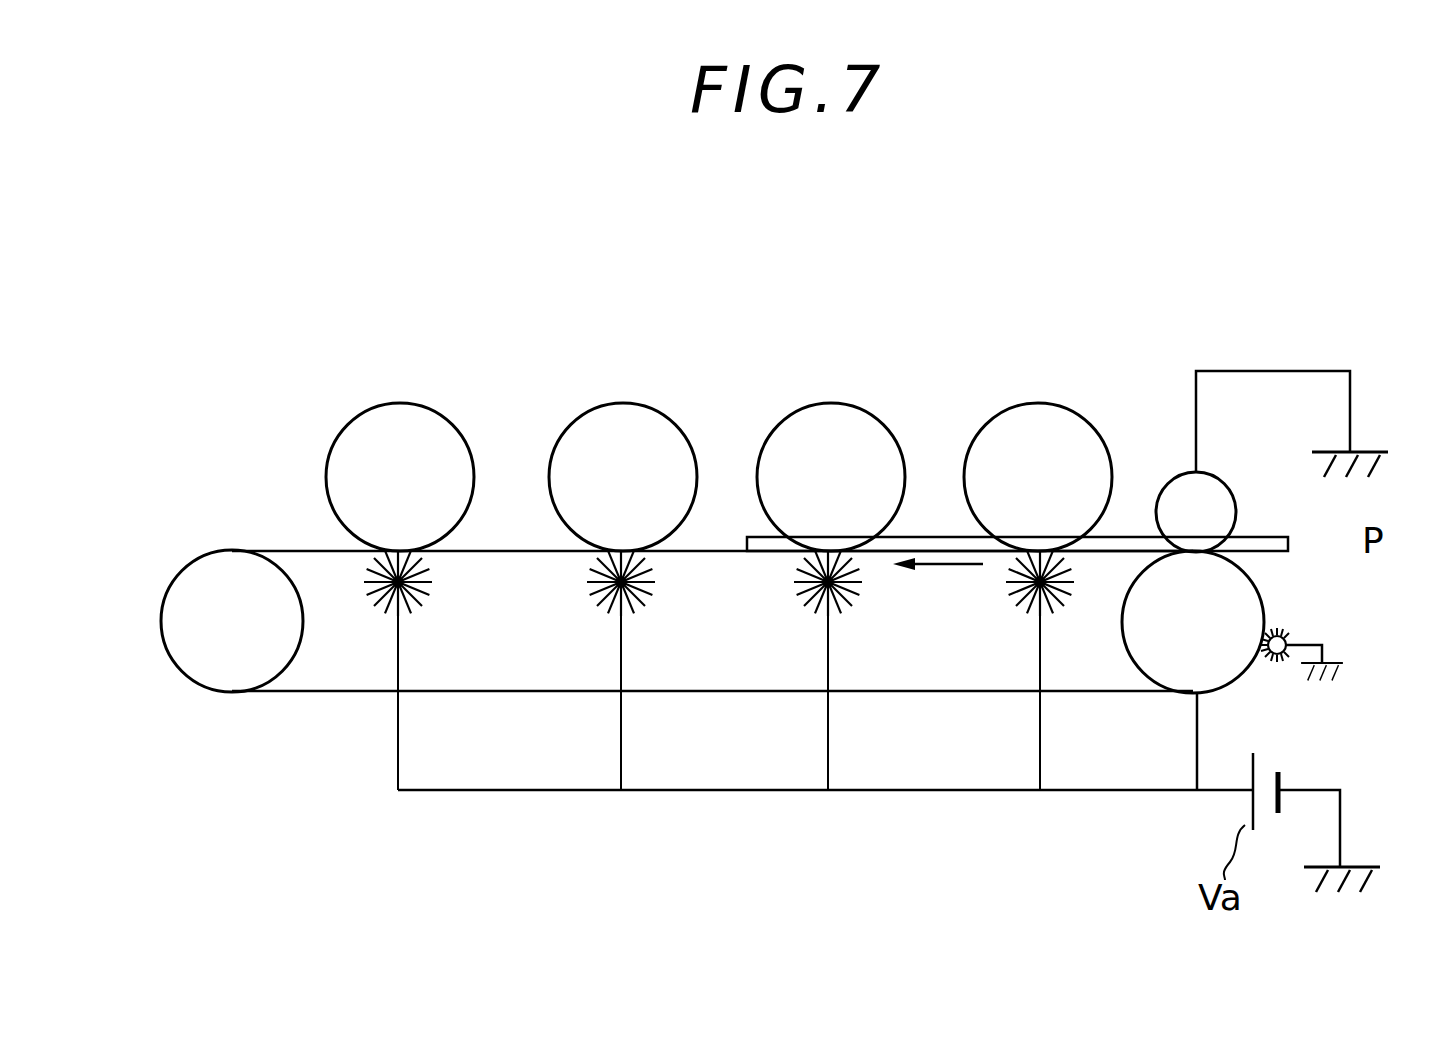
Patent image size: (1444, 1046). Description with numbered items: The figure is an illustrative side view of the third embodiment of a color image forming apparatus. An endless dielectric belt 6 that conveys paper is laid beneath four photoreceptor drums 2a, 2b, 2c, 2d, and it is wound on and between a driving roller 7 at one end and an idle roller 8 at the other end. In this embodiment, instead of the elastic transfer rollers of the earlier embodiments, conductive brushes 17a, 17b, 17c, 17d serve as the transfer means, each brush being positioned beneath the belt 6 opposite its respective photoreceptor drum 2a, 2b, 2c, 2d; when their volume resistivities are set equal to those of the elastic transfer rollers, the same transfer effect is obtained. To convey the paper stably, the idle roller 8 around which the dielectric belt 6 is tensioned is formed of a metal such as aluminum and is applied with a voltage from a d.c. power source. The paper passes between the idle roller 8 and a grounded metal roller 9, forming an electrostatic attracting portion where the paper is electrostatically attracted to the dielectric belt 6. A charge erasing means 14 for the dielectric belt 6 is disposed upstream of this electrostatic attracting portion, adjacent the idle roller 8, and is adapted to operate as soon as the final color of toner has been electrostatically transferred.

The photoreceptor drum 2a is at (1062, 418).
The photoreceptor drum 2b is at (850, 425).
The photoreceptor drum 2c is at (645, 425).
The photoreceptor drum 2d is at (420, 437).
The dielectric belt 6 is at (327, 692).
The driving roller 7 is at (229, 667).
The idle roller 8 is at (1213, 661).
The metal roller 9 is at (1212, 494).
The charge erasing means 14 is at (1297, 627).
The conductive brush 17a is at (1003, 605).
The conductive brush 17b is at (783, 603).
The conductive brush 17c is at (580, 607).
The conductive brush 17d is at (366, 597).